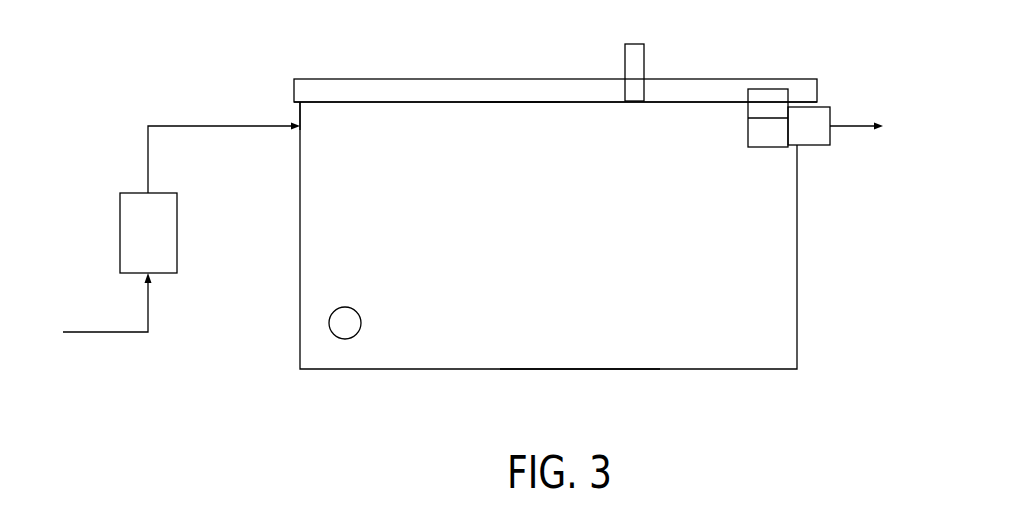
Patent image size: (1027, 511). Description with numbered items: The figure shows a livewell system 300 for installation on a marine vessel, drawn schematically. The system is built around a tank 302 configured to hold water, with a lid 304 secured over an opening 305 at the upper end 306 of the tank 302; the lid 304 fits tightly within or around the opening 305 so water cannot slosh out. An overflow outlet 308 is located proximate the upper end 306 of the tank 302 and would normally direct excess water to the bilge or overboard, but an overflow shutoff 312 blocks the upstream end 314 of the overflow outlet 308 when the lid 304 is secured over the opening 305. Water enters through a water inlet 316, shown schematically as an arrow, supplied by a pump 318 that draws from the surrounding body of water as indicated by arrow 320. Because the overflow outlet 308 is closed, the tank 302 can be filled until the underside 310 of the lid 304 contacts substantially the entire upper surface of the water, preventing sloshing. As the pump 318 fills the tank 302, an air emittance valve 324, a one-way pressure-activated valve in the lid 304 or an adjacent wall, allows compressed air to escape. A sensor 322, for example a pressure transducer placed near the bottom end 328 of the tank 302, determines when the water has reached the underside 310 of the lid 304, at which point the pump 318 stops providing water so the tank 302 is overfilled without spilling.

The livewell system 300 is at (783, 50).
The tank 302 is at (797, 292).
The lid 304 is at (520, 79).
The opening 305 is at (305, 115).
The upper end 306 is at (378, 102).
The overflow outlet 308 is at (823, 107).
The underside 310 is at (517, 103).
The overflow shutoff 312 is at (768, 150).
The upstream end 314 is at (787, 128).
The water inlet 316 is at (230, 125).
The pump 318 is at (177, 237).
The arrow 320 is at (103, 332).
The sensor 322 is at (358, 310).
The air emittance valve 324 is at (635, 43).
The bottom end 328 is at (577, 369).